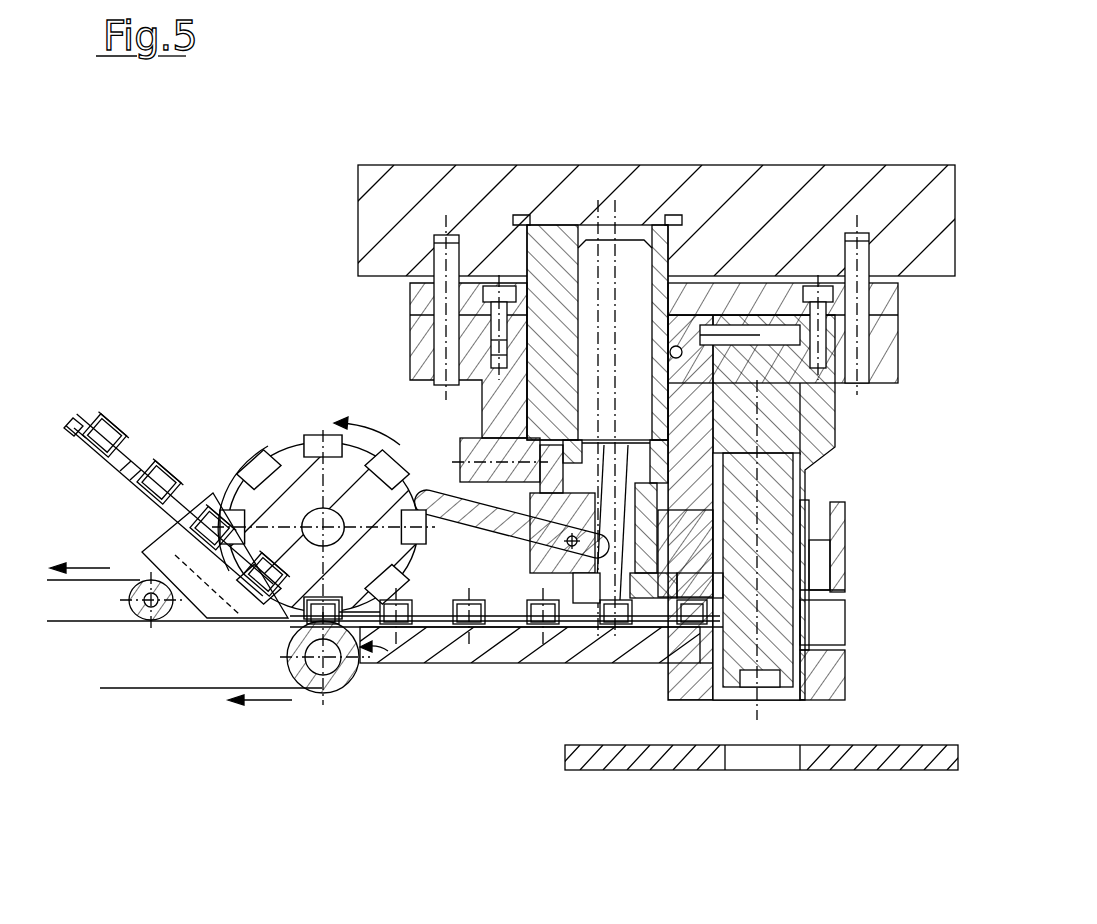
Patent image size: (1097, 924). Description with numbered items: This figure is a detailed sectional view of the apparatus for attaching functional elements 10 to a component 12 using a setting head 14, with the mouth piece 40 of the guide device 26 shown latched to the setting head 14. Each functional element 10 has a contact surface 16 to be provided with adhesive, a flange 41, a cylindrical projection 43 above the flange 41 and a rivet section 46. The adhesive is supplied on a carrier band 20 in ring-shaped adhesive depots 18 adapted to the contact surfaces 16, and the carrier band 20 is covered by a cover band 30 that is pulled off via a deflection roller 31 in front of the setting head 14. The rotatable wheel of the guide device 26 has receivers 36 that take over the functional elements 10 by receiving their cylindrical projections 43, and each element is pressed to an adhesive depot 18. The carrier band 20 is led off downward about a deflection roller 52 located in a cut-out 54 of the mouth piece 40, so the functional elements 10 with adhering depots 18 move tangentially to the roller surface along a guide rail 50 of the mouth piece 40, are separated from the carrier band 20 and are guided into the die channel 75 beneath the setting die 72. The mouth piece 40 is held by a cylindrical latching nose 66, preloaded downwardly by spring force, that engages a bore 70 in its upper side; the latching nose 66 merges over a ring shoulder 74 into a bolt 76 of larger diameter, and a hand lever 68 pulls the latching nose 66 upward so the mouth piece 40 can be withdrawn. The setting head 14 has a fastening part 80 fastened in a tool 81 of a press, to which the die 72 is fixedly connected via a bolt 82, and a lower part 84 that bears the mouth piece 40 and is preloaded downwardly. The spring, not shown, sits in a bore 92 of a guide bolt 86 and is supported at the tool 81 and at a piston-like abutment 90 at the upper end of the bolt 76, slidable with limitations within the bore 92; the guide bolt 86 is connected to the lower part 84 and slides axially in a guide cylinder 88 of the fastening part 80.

The functional elements 10 is at (113, 418).
The component 12 is at (866, 782).
The setting head 14 is at (845, 458).
The contact surface 16 is at (80, 455).
The adhesive depots 18 is at (240, 624).
The carrier band 20 is at (212, 689).
The guide device 26 is at (213, 507).
The cover band 30 is at (62, 619).
The deflection roller 31 is at (140, 583).
The receivers 36 is at (272, 470).
The mouth piece 40 is at (477, 655).
The flanges 41 is at (148, 479).
The cylindrical projections 43 is at (147, 477).
The rivet section 46 is at (78, 450).
The guide rail 50 is at (447, 627).
The deflection roller 52 is at (318, 690).
The cut-out 54 is at (380, 663).
The latching nose 66 is at (628, 610).
The hand lever 68 is at (442, 522).
The bore 70 is at (602, 605).
The setting die 72 is at (767, 640).
The ring shoulder 74 is at (639, 600).
The die channel 75 is at (730, 560).
The bolt 76 is at (606, 445).
The fastening part 80 is at (410, 333).
The tool 81 is at (372, 196).
The bolt 82 is at (770, 377).
The lower part 84 is at (700, 522).
The guide bolt 86 is at (587, 298).
The guide cylinder 88 is at (526, 272).
The piston-like abutment 90 is at (612, 585).
The bore 92 is at (632, 297).